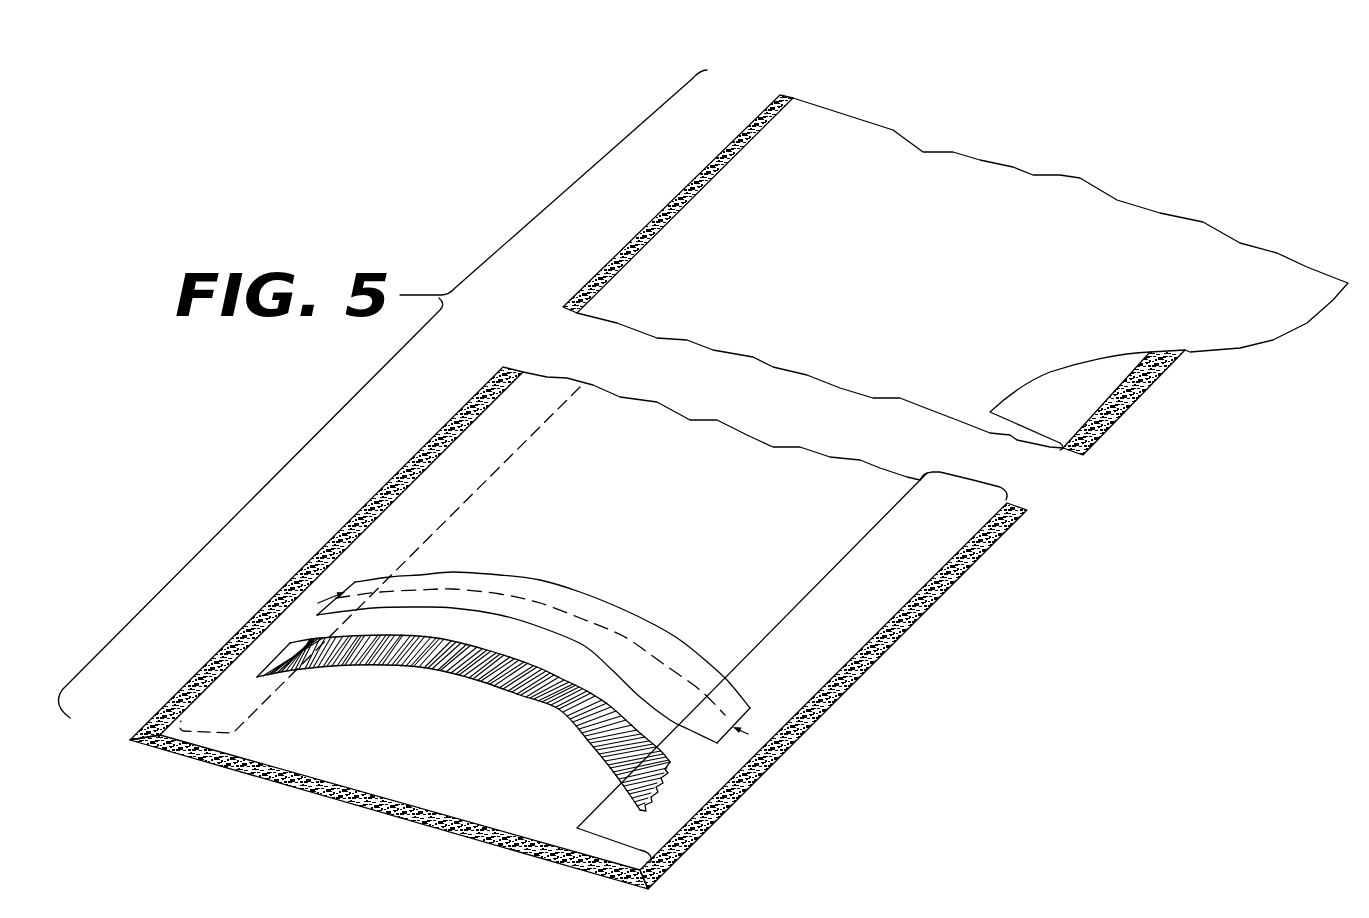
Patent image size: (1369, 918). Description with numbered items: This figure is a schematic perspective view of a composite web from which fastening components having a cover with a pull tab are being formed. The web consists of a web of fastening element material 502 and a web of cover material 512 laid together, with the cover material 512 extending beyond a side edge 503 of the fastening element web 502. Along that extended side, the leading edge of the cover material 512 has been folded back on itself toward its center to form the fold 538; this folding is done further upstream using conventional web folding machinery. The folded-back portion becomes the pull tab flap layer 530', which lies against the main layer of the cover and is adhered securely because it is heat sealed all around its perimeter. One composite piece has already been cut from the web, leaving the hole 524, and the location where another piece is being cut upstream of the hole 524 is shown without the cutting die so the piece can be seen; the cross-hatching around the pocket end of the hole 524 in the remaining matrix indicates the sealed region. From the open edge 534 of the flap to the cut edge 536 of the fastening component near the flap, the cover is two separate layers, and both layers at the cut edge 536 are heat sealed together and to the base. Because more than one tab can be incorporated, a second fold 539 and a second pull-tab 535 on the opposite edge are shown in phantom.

The web of fastening element material 502 is at (622, 250).
The side edge of the web 503 is at (1137, 398).
The cover material 512 is at (513, 367).
The hole 524 is at (530, 690).
The pull tab flap layer 530' is at (792, 667).
The open edge of the flap 534 is at (713, 683).
The second pull-tab 535 is at (392, 579).
The cut edge of the fastening component 536 is at (746, 709).
The fold 538 is at (813, 713).
The second fold 539 is at (345, 525).